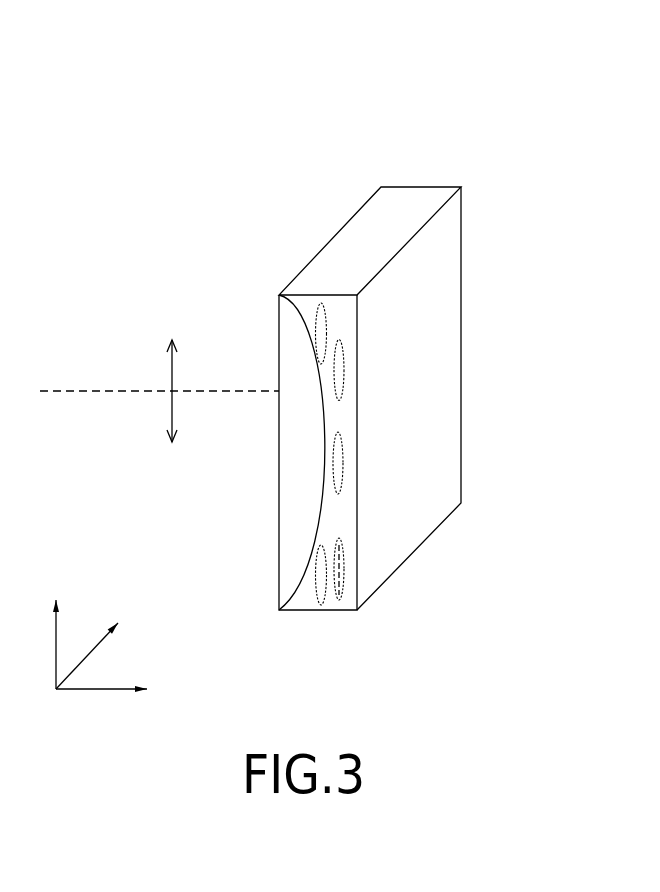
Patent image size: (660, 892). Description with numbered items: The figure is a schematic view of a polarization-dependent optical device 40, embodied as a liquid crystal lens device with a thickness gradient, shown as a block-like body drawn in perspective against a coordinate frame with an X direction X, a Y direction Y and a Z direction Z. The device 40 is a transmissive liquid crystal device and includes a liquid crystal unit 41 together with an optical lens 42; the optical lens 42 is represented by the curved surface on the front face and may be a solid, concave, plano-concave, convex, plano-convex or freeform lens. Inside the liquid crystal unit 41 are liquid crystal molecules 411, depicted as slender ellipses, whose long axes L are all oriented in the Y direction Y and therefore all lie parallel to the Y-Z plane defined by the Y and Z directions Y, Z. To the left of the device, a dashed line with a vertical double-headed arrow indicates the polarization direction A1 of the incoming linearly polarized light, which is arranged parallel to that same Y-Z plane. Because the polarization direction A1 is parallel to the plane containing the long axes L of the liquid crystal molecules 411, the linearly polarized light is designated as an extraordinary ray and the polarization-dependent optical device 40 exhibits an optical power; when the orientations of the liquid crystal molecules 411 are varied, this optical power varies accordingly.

The polarization-dependent optical device 40 is at (390, 177).
The liquid crystal unit 41 is at (337, 515).
The liquid crystal molecules 411 is at (343, 368).
The optical lens 42 is at (298, 453).
The polarization direction A1 is at (172, 380).
The long axes L is at (343, 570).
The X direction X is at (99, 647).
The Y direction Y is at (55, 628).
The Z direction Z is at (114, 688).